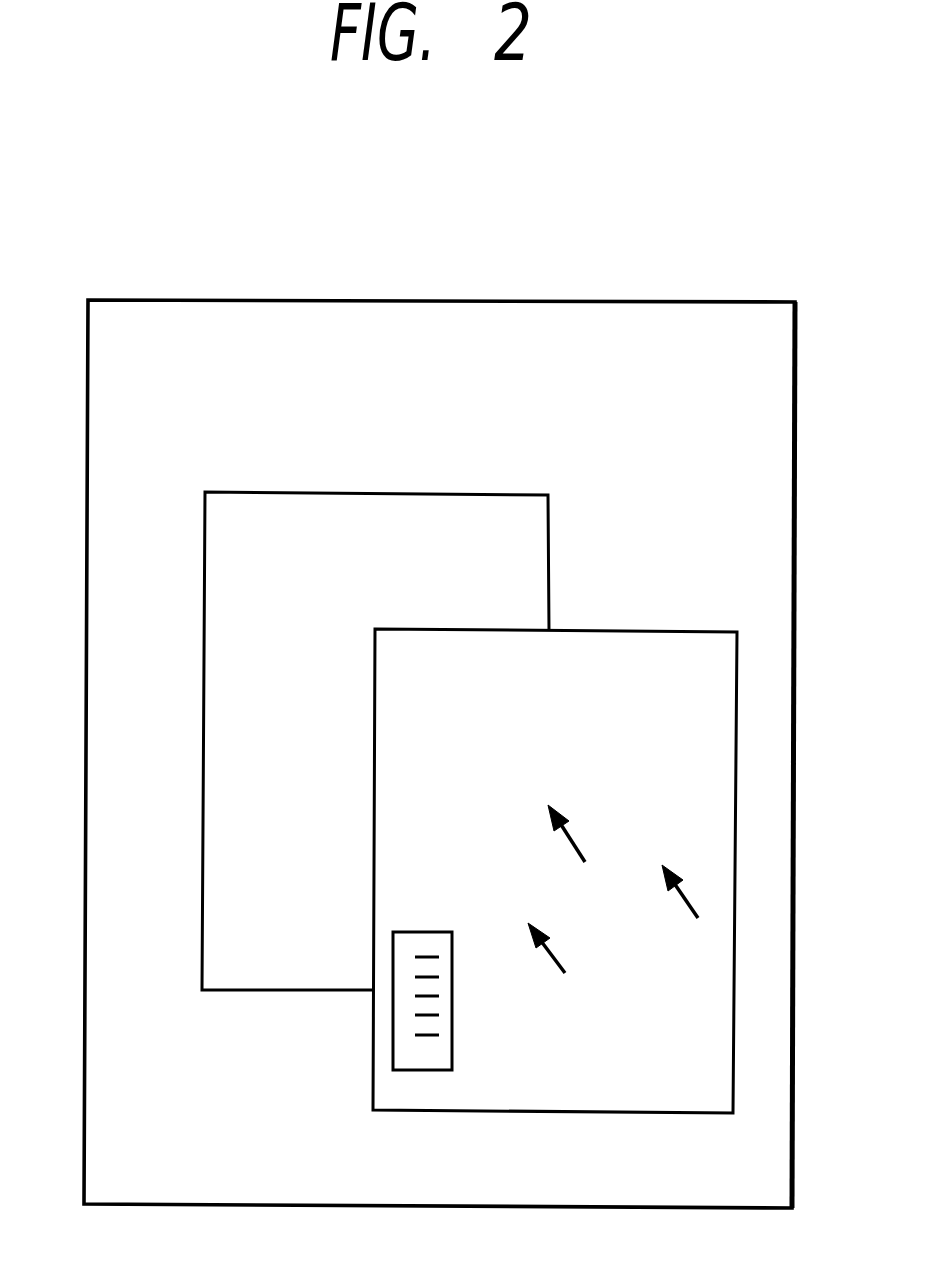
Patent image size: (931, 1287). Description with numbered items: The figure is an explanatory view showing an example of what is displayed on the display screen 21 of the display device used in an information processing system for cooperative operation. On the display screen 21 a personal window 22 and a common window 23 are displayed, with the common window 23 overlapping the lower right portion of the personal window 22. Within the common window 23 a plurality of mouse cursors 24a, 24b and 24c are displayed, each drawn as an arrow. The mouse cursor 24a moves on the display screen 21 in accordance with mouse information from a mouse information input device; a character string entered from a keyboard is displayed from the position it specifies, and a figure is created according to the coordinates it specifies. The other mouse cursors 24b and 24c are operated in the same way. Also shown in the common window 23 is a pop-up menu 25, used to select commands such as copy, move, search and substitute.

The display screen 21 is at (692, 301).
The personal window 22 is at (438, 494).
The common window 23 is at (640, 630).
The mouse cursor 24a is at (574, 844).
The mouse cursor 24b is at (553, 968).
The mouse cursor 24c is at (685, 902).
The pop-up menu 25 is at (433, 931).